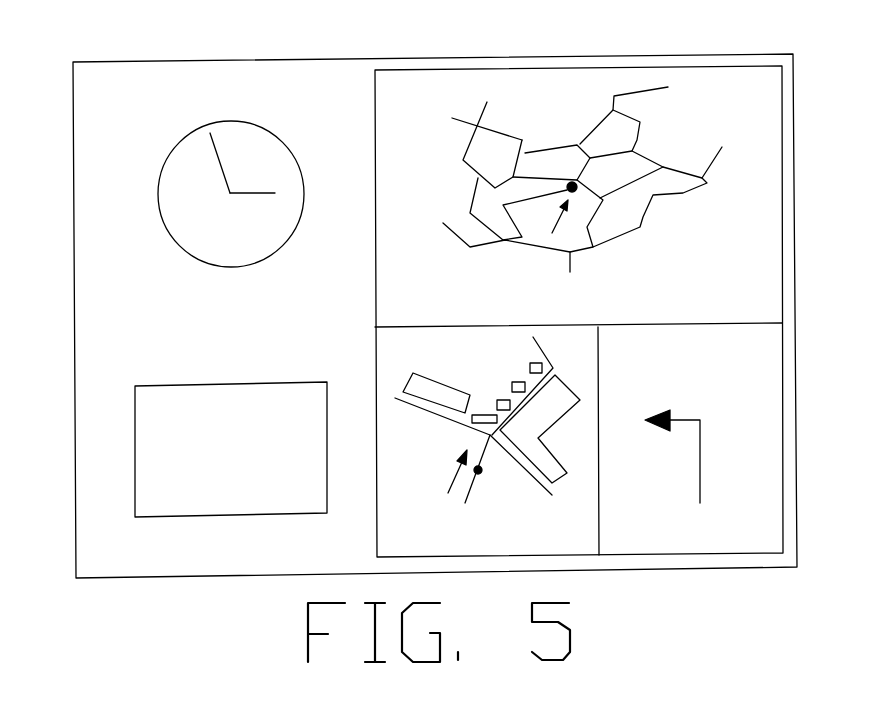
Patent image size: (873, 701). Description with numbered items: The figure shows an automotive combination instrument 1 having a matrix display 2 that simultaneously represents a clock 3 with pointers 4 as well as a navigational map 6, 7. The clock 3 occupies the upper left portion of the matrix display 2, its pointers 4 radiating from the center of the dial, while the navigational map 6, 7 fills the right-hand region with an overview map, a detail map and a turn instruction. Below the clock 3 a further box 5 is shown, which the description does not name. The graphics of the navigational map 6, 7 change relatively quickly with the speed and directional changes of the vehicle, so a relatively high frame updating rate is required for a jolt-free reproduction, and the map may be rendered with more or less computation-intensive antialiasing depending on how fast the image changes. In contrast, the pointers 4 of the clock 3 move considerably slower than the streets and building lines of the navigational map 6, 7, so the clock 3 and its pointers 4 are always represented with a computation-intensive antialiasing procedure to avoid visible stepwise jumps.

The combination instrument 1 is at (75, 265).
The matrix display 2 is at (115, 142).
The clock 3 is at (257, 152).
The pointers 4 is at (213, 153).
The vehicle data display 5 is at (160, 420).
The navigational map 6 is at (758, 222).
The navigational map 7 is at (752, 343).